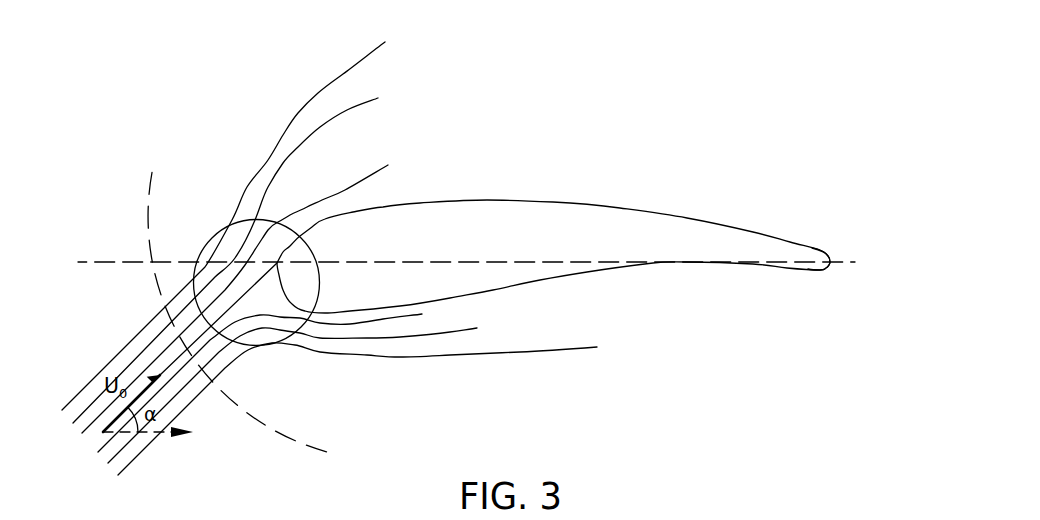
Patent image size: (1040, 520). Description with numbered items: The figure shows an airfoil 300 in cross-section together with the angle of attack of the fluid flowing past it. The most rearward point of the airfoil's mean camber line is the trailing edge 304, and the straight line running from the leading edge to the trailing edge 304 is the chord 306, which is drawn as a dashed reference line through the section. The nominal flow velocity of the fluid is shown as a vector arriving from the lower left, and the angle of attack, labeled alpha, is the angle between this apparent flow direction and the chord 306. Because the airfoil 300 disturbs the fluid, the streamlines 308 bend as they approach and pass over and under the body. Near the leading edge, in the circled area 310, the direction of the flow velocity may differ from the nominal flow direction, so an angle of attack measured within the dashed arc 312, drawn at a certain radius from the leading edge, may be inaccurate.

The airfoil 300 is at (647, 147).
The trailing edge 304 is at (833, 262).
The chord 306 is at (433, 262).
The streamlines 308 is at (368, 108).
The area near the leading edge 310 is at (293, 343).
The arc 312 is at (282, 437).